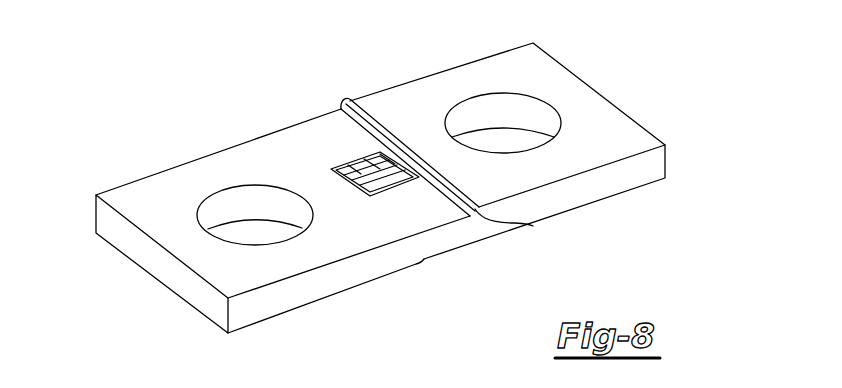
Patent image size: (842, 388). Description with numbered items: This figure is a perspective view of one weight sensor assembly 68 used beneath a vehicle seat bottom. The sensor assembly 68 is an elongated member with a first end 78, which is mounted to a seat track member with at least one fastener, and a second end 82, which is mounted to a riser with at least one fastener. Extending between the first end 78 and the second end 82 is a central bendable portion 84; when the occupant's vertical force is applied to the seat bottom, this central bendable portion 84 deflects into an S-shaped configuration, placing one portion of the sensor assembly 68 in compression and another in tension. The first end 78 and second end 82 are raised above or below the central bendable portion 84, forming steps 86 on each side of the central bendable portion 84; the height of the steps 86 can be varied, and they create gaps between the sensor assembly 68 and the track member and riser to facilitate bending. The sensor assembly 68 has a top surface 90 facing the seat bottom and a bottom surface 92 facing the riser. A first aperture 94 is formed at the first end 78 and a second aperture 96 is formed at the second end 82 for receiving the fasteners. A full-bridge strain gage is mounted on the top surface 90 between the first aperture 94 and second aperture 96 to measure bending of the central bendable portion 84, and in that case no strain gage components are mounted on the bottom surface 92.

The sensor assembly 68 is at (396, 201).
The first end 78 is at (623, 183).
The second end 82 is at (252, 317).
The central bendable portion 84 is at (467, 233).
The steps 86 is at (533, 226).
The top surface 90 is at (270, 157).
The bottom surface 92 is at (438, 260).
The first aperture 94 is at (500, 137).
The second aperture 96 is at (252, 232).